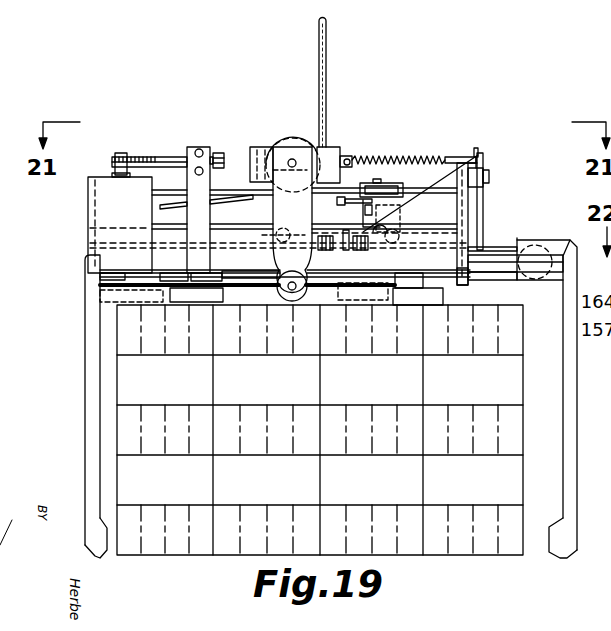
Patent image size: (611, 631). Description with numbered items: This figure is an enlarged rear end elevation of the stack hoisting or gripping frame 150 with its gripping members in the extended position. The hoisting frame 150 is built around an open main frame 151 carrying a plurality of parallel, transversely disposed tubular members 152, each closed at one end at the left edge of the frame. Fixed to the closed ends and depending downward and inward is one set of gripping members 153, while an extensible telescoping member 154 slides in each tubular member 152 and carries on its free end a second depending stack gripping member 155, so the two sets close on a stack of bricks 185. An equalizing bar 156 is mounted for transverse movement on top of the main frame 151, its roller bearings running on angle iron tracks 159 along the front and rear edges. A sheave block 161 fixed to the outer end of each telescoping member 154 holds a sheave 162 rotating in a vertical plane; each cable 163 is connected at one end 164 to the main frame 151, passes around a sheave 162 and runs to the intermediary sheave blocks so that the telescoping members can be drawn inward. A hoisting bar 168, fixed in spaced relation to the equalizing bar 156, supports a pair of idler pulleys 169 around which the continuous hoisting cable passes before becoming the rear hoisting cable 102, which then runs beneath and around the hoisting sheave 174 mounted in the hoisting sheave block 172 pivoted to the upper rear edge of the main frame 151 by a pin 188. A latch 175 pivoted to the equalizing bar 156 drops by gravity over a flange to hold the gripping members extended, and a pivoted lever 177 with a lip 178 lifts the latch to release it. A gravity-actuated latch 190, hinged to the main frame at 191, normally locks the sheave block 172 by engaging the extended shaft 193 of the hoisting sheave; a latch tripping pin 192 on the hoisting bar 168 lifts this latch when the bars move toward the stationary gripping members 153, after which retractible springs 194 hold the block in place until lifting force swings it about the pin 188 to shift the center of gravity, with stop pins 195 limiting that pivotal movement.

The hoisting cable 102 is at (327, 57).
The stack hoisting or gripping frame 150 is at (502, 181).
The open main frame 151 is at (107, 291).
The tubular member 152 is at (398, 271).
The gripping member 153 is at (92, 353).
The extensible telescoping member 154 is at (490, 260).
The stack gripping member 155 is at (567, 453).
The equalizing bar 156 is at (330, 225).
The angle iron track 159 is at (263, 243).
The sheave block 161 is at (558, 246).
The sheave 162 is at (530, 272).
The cable 163 is at (147, 273).
The cable end 164 is at (95, 274).
The hoisting bar 168 is at (405, 190).
The idler pulley 169 is at (372, 188).
The hoisting sheave block 172 is at (254, 147).
The hoisting sheave 174 is at (294, 160).
The latch 175 is at (411, 222).
The pivoted lever 177 is at (487, 201).
The lip 178 is at (473, 279).
The stack of bricks 185 is at (379, 390).
The pin 188 is at (292, 290).
The gravity-actuated latch 190 is at (221, 199).
The hinge 191 is at (444, 158).
The latch tripping pin 192 is at (350, 200).
The extended shaft 193 is at (311, 128).
The retractible spring 194 is at (387, 152).
The stop pin 195 is at (219, 150).